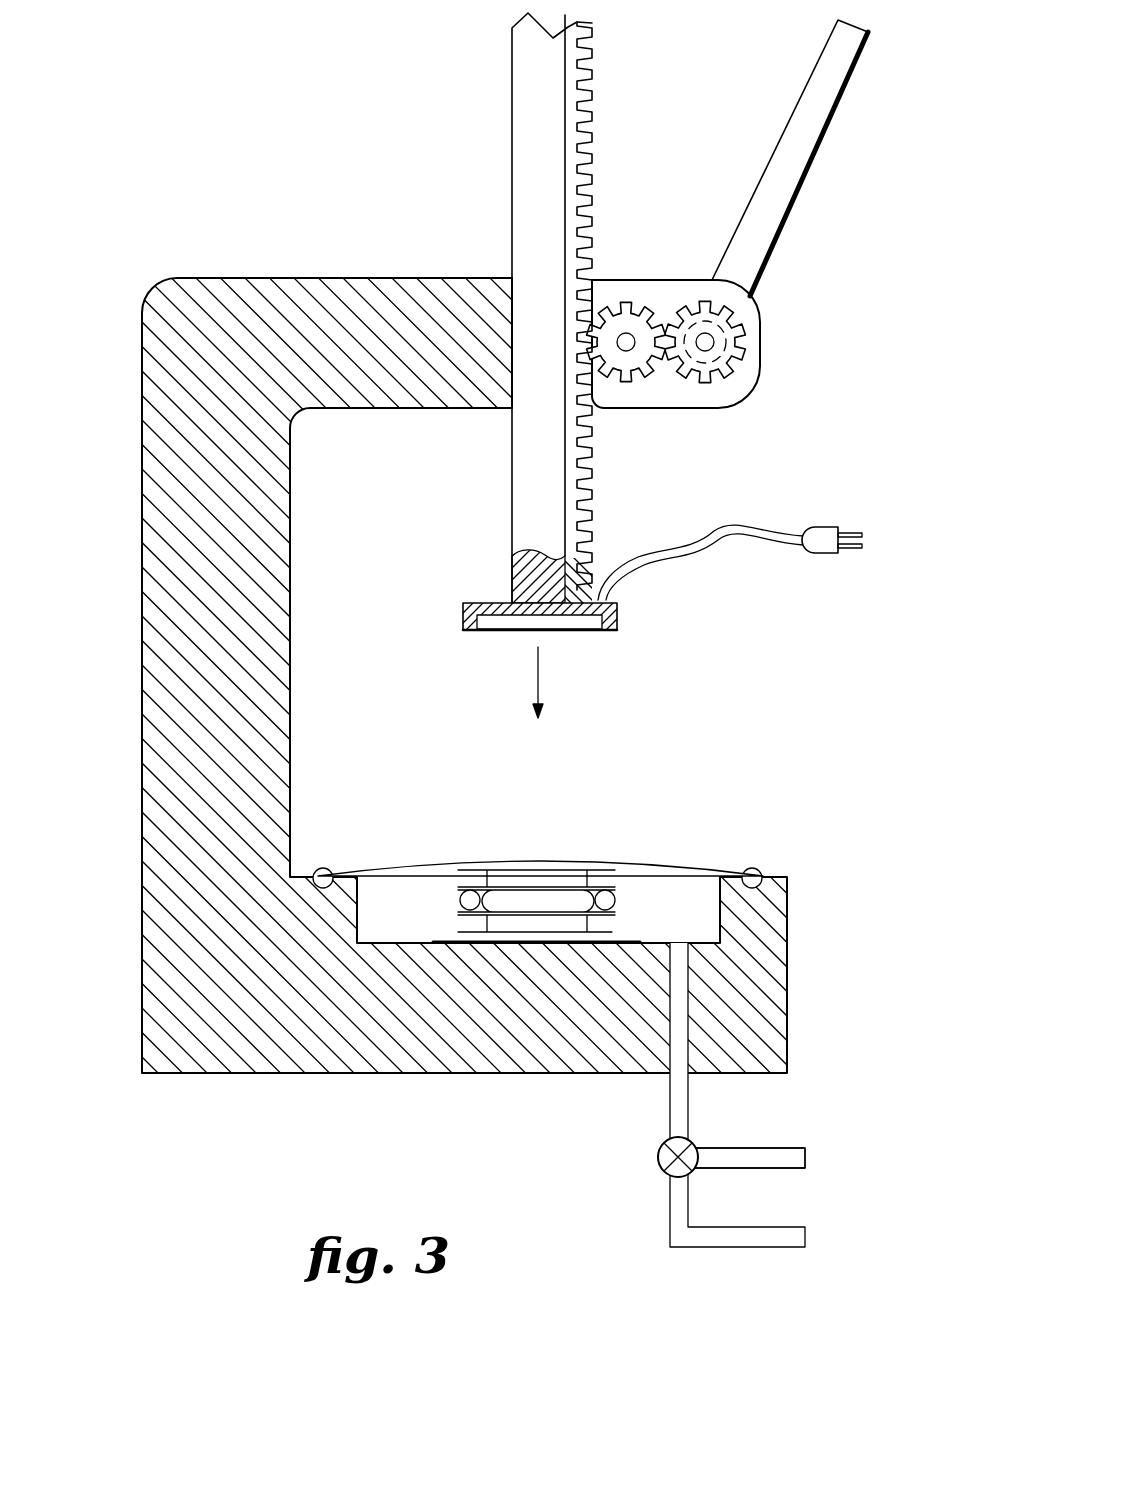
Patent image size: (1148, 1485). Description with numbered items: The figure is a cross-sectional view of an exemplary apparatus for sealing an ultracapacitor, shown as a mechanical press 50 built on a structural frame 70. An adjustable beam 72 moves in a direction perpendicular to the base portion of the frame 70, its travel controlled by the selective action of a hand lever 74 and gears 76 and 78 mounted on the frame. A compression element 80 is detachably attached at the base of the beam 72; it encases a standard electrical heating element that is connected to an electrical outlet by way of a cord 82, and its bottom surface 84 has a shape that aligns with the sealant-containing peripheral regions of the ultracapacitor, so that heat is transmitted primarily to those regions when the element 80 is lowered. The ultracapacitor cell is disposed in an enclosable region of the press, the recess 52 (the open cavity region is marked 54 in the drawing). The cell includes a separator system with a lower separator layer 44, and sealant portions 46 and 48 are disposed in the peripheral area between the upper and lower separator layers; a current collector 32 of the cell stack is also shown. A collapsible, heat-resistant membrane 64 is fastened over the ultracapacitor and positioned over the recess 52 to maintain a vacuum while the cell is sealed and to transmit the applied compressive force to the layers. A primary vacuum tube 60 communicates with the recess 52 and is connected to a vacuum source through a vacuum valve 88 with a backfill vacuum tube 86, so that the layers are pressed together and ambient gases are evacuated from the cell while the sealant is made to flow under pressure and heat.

The press 50 is at (268, 222).
The structural frame 70 is at (292, 525).
The adjustable beam 72 is at (512, 157).
The hand lever 74 is at (813, 72).
The gear 76 is at (625, 303).
The gear 78 is at (760, 335).
The compression element 80 is at (574, 654).
The cord 82 is at (773, 535).
The bottom surface 84 is at (608, 632).
The collapsible membrane 64 is at (405, 862).
The current collector 32 is at (523, 866).
The lower separator layer 44 is at (458, 933).
The sealant portion 46 is at (458, 898).
The sealant portion 48 is at (615, 901).
The cavity 54 is at (650, 893).
The recess 52 is at (712, 890).
The backfill vacuum tube 86 is at (777, 1147).
The vacuum valve 88 is at (657, 1157).
The primary vacuum tube 60 is at (721, 1131).